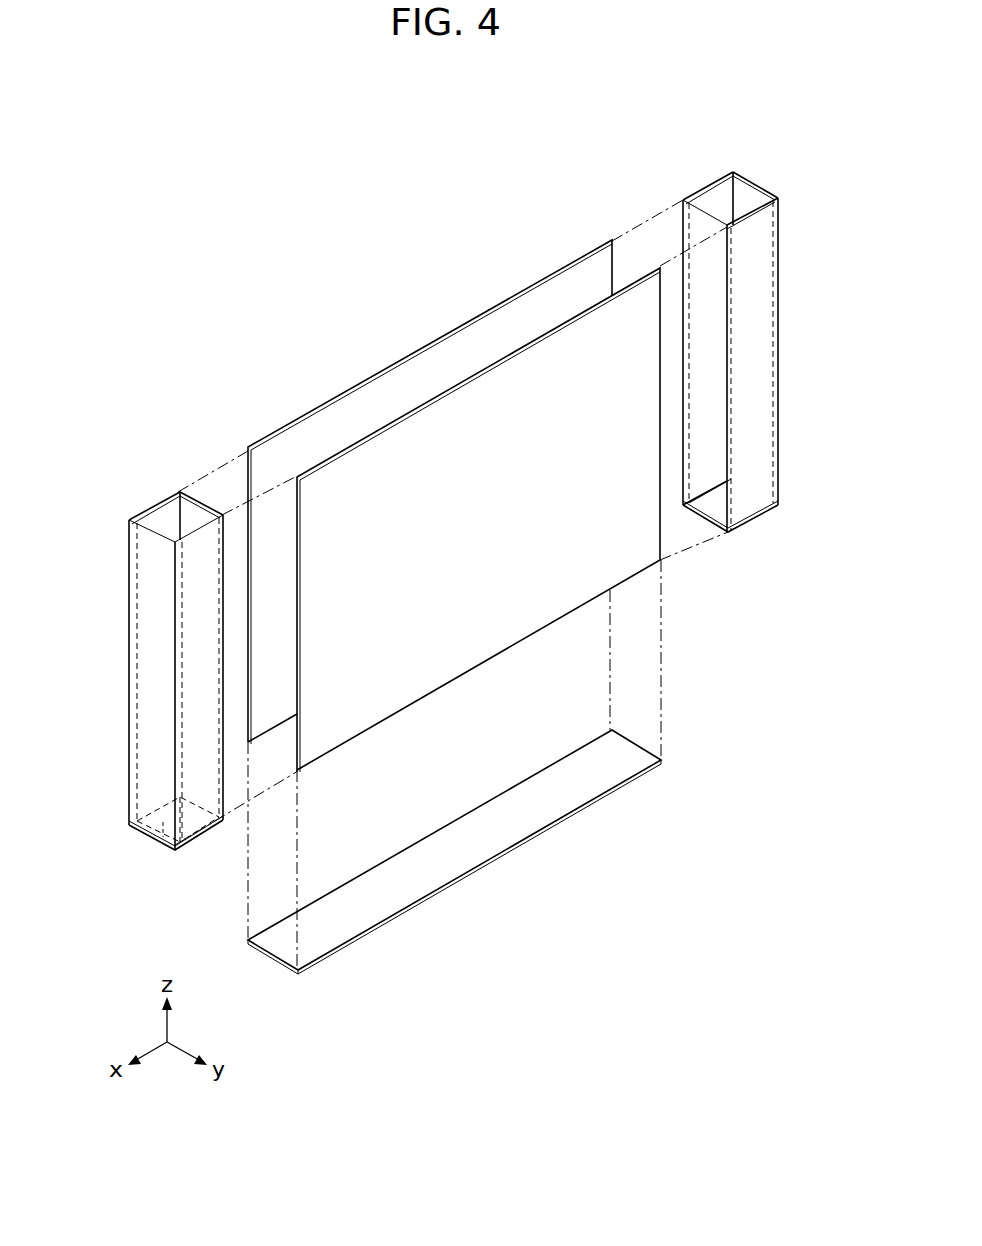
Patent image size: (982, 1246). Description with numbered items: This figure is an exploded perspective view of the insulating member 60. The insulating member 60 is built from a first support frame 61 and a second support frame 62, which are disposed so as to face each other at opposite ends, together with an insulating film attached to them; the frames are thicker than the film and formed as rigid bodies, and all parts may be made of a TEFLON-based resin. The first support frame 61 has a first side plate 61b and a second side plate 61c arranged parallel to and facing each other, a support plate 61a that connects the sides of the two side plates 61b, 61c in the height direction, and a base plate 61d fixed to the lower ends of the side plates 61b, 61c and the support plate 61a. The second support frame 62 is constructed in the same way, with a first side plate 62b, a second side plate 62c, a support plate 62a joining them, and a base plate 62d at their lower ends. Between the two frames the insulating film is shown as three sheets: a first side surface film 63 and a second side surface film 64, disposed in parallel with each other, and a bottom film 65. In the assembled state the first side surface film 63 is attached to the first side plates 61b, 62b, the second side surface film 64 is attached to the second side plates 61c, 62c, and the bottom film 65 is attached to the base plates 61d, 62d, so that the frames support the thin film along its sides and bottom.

The insulating member 60 is at (360, 322).
The first support frame 61 is at (147, 494).
The support plate 61a is at (140, 562).
The first side plate 61b is at (170, 515).
The second side plate 61c is at (208, 548).
The base plate 61d is at (163, 837).
The second support frame 62 is at (738, 163).
The support plate 62a is at (745, 203).
The first side plate 62b is at (710, 210).
The second side plate 62c is at (748, 500).
The base plate 62d is at (712, 508).
The first side surface film 63 is at (495, 327).
The second side surface film 64 is at (472, 405).
The bottom film 65 is at (480, 842).